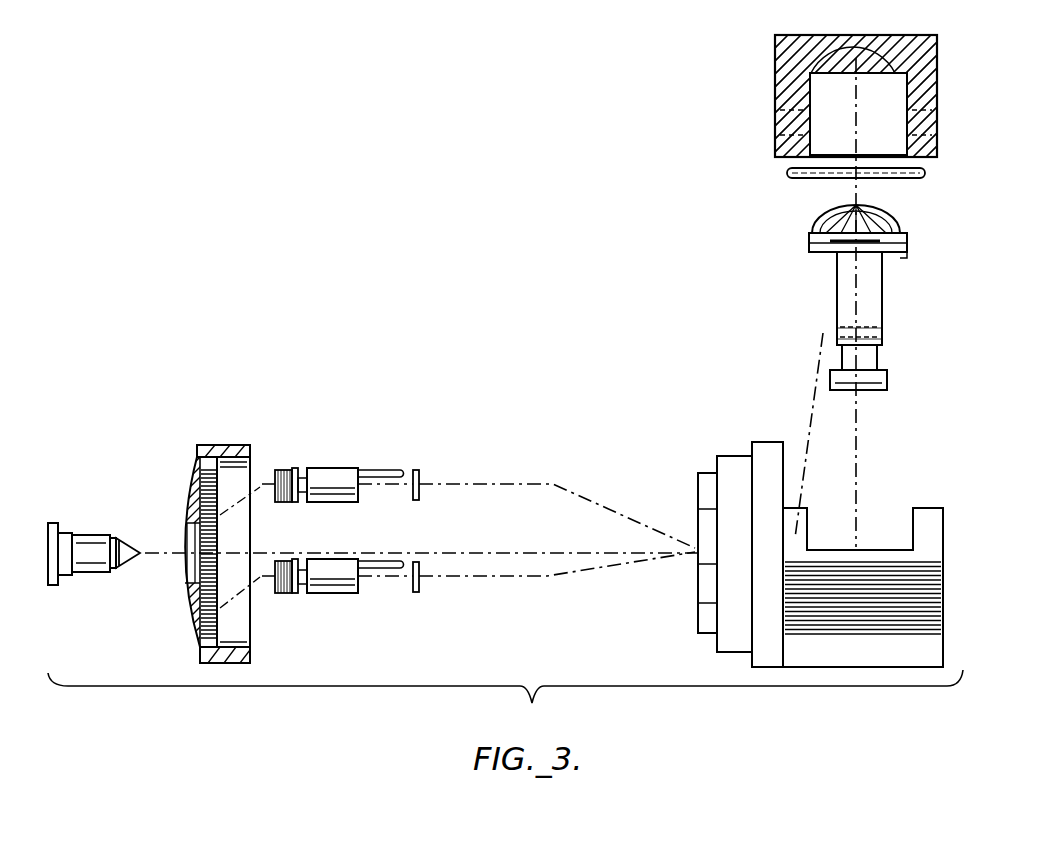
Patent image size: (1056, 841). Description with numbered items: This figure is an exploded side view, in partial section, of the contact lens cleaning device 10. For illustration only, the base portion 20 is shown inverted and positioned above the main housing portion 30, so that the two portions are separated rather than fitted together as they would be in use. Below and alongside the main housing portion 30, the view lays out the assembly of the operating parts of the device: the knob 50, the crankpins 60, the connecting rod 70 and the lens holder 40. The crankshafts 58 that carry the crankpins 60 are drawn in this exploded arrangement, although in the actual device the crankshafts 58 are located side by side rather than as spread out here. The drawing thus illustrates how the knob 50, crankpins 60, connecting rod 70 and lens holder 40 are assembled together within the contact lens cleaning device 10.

The contact lens cleaning device 10 is at (668, 343).
The base portion 20 is at (937, 71).
The main housing portion 30 is at (952, 570).
The lens holder 40 is at (907, 236).
The knob 50 is at (233, 445).
The crankshaft 58 is at (325, 468).
The crankpin 60 is at (387, 470).
The connecting rod 70 is at (883, 308).